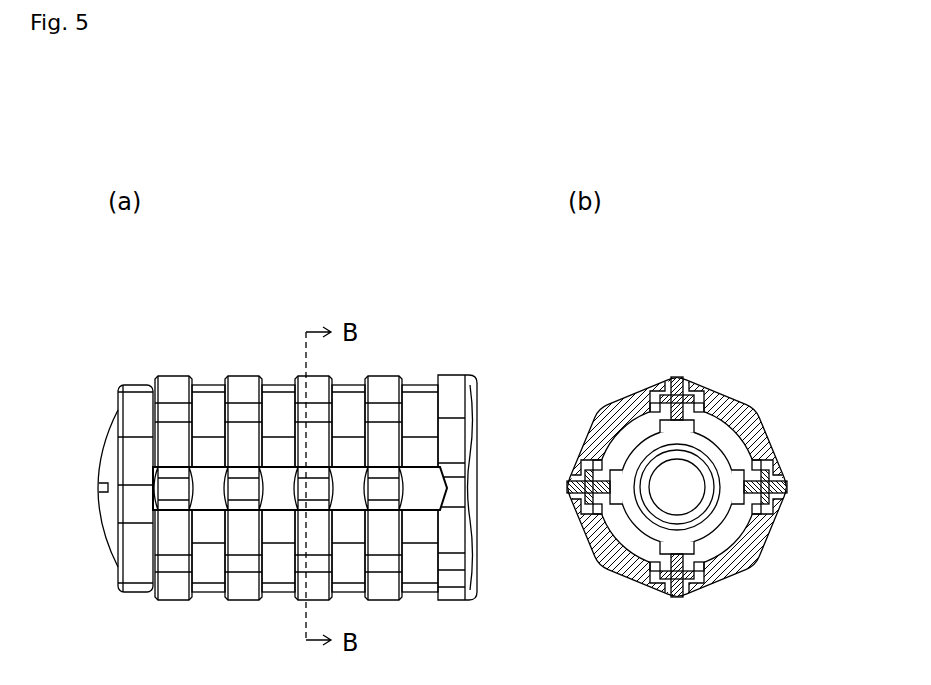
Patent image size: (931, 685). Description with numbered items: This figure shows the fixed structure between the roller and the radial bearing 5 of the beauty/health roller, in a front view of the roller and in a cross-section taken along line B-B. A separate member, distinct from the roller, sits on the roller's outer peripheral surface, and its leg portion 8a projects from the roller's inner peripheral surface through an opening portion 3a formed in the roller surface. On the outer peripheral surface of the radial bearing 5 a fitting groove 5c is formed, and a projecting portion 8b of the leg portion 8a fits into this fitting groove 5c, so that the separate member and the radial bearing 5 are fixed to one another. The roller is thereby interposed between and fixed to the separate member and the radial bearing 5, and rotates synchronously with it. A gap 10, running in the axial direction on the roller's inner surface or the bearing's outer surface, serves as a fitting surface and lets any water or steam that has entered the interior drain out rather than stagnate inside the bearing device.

The opening portion 3a is at (700, 362).
The radial bearing 5 is at (606, 568).
The fitting groove 5c is at (743, 380).
The leg portion 8a is at (651, 359).
The projecting portion 8b is at (610, 377).
The gap 10 is at (762, 425).